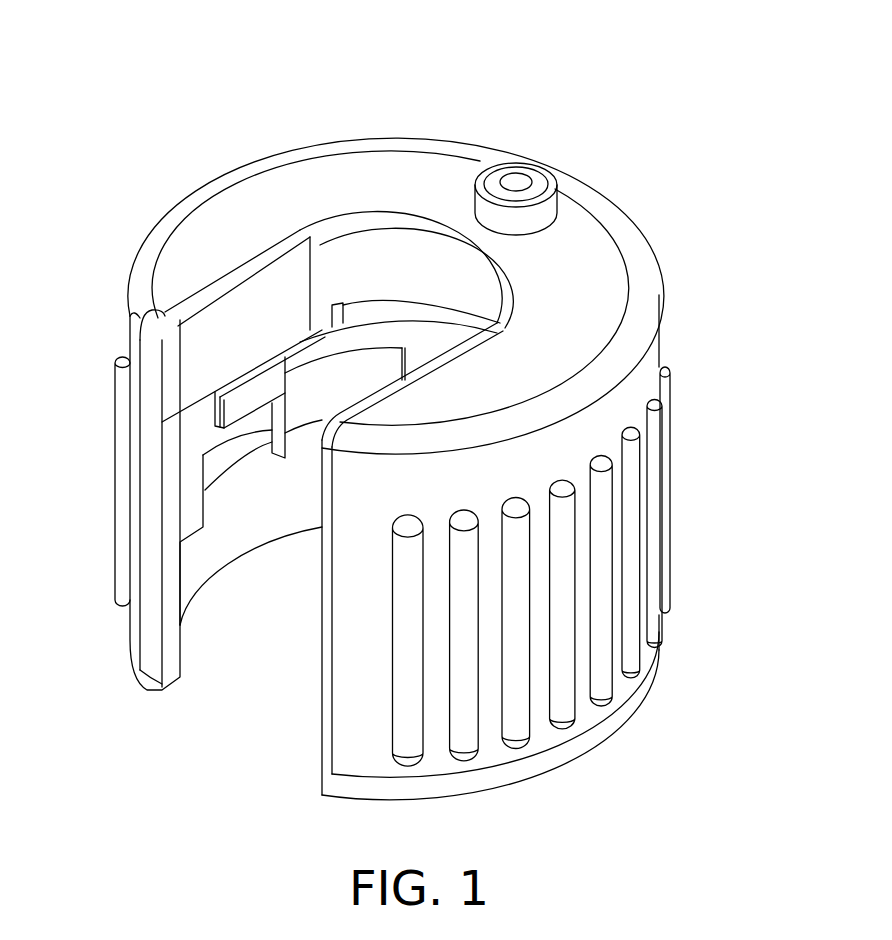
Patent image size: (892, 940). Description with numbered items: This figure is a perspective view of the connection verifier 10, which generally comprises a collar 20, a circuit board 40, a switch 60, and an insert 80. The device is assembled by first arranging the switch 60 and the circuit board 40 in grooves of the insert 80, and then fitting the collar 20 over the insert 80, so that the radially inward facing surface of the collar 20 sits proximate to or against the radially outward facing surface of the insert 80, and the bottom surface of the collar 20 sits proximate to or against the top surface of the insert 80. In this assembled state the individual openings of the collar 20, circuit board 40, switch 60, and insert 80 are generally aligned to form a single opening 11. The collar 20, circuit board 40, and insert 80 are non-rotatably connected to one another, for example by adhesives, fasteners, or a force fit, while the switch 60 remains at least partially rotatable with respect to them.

The connection verifier 10 is at (537, 97).
The opening 11 is at (232, 720).
The collar 20 is at (604, 267).
The circuit board 40 is at (397, 308).
The switch 60 is at (327, 347).
The insert 80 is at (183, 494).